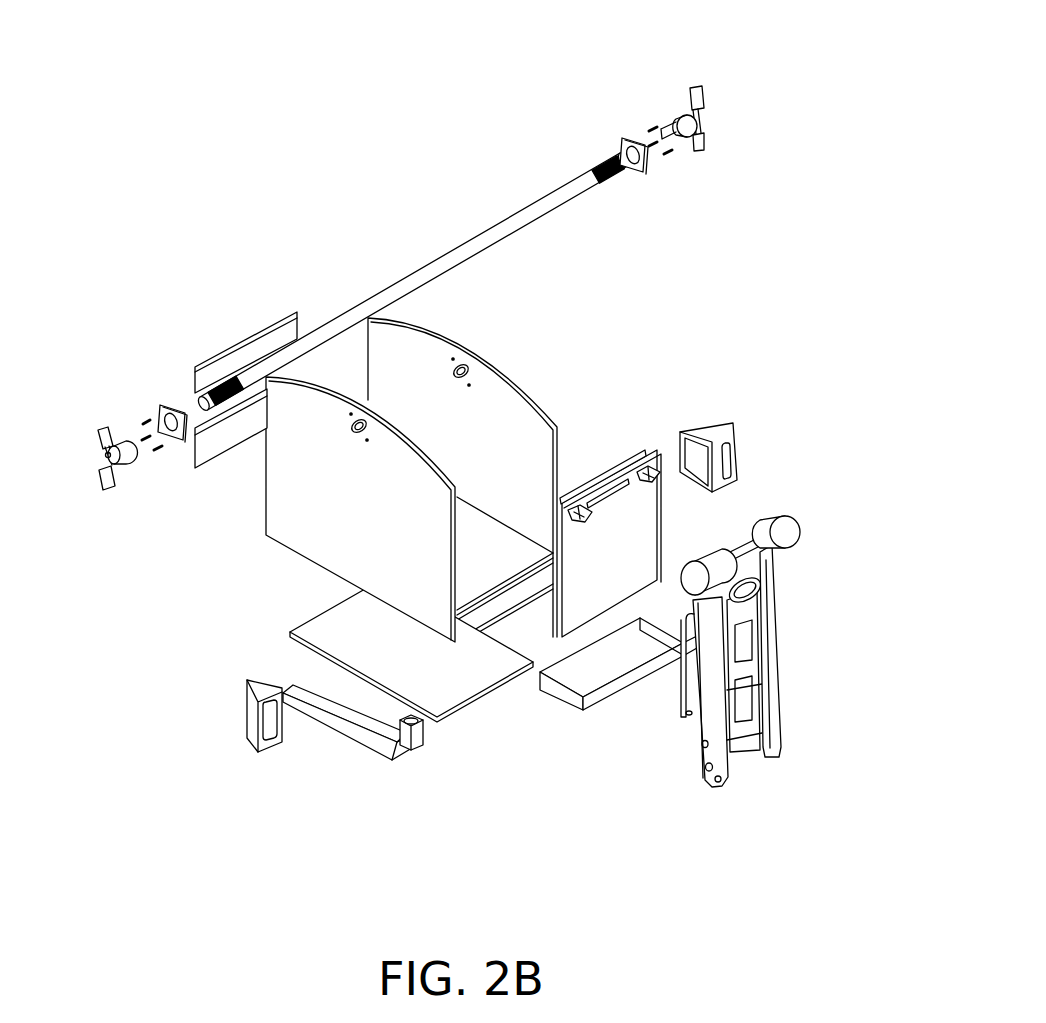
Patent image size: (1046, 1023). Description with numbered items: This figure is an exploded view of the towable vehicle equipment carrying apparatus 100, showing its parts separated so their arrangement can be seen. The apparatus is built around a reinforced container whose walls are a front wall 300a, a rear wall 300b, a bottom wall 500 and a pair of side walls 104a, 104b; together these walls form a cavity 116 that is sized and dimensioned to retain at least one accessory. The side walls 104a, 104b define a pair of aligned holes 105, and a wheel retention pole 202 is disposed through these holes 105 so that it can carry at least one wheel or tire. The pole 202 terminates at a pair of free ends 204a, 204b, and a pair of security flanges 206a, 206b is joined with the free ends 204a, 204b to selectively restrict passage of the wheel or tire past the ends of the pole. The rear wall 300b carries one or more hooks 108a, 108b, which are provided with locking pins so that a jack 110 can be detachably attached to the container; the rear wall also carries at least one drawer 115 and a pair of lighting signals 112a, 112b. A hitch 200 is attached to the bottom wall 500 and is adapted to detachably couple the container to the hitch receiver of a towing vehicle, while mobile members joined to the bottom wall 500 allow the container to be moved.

The towable vehicle equipment carrying apparatus 100 is at (180, 143).
The side wall 104a is at (302, 515).
The side wall 104b is at (423, 357).
The aligned holes 105 is at (468, 366).
The hook 108a is at (575, 508).
The hook 108b is at (650, 468).
The jack 110 is at (795, 610).
The lighting signal 112a is at (250, 740).
The lighting signal 112b is at (714, 426).
The drawer 115 is at (573, 700).
The cavity 116 is at (474, 477).
The hitch 200 is at (377, 756).
The wheel retention pole 202 is at (422, 277).
The free end 204a is at (198, 397).
The free end 204b is at (585, 173).
The security flange 206a is at (103, 452).
The security flange 206b is at (703, 117).
The front wall 300a is at (248, 354).
The rear wall 300b is at (632, 530).
The bottom wall 500 is at (338, 630).